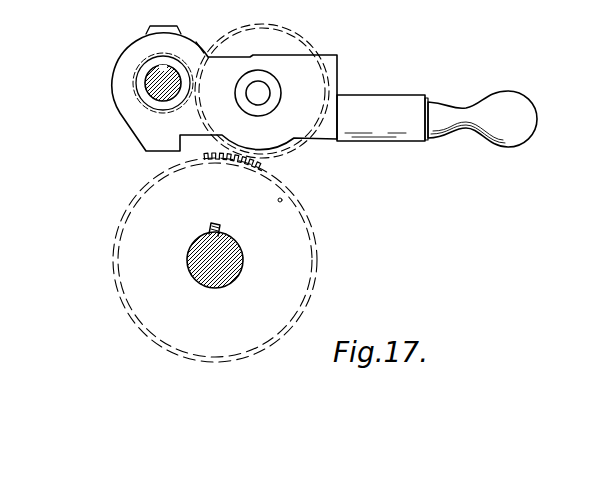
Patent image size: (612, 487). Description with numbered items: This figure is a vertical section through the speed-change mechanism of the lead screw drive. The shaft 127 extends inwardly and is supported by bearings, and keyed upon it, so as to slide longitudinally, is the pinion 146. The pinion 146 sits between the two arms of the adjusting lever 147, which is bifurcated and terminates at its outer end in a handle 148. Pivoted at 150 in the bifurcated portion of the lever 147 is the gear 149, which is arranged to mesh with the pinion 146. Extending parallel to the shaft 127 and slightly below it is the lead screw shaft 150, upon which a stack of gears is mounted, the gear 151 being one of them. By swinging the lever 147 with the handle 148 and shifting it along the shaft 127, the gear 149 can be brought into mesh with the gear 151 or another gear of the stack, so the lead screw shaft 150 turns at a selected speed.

The shaft 127 is at (146, 85).
The pinion 146 is at (156, 116).
The adjusting lever 147 is at (342, 100).
The handle 148 is at (444, 112).
The gear 149 is at (276, 40).
The lead screw shaft 150 is at (257, 94).
The gear of the stack 151 is at (289, 245).